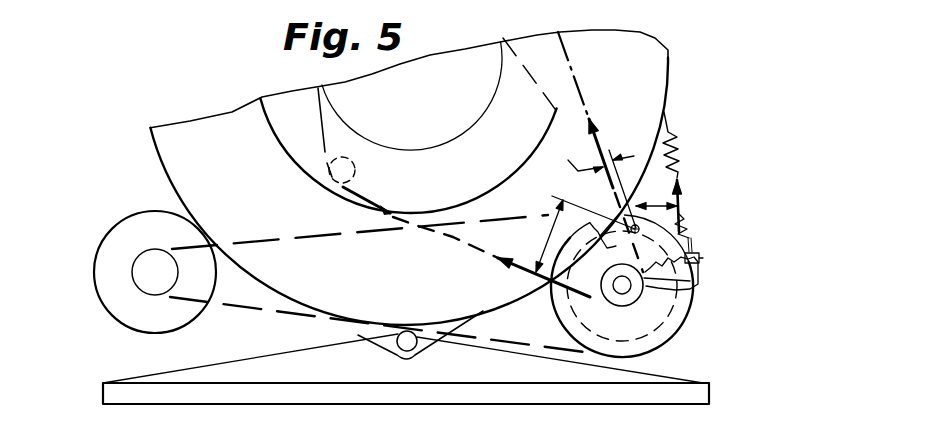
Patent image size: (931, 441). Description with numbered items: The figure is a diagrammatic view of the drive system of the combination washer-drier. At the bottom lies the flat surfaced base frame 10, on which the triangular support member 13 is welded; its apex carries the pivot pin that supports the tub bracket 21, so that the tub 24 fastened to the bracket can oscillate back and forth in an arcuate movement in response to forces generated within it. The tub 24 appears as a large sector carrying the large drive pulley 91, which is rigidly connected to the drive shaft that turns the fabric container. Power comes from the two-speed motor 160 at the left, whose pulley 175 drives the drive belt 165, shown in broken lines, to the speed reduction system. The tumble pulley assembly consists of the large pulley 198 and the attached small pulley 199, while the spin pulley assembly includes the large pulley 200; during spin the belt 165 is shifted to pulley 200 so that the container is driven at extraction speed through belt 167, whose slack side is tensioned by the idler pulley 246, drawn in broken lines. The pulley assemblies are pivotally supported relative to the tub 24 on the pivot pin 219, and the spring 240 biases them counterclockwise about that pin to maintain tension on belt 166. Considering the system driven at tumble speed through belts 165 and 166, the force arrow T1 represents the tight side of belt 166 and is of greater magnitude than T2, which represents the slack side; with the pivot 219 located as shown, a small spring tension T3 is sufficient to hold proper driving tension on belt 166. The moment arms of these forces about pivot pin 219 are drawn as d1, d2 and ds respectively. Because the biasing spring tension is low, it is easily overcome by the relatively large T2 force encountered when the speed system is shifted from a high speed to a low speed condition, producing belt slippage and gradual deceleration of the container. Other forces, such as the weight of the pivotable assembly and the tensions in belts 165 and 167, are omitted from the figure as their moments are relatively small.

The base frame 10 is at (477, 394).
The support member 13 is at (288, 383).
The tub bracket 21 is at (378, 335).
The tub 24 is at (145, 173).
The large drive pulley 91 is at (281, 135).
The two-speed motor 160 is at (125, 312).
The drive belt 165 is at (254, 310).
The belt 166 is at (431, 233).
The belt 167 is at (333, 142).
The pulley 175 is at (138, 268).
The large pulley 198 is at (683, 322).
The small pulley 199 is at (673, 340).
The large pulley 200 is at (693, 290).
The pivot pin 219 is at (690, 242).
The spring 240 is at (680, 150).
The idler pulley 246 is at (333, 176).
The tight side belt tension T1 is at (595, 137).
The slack side belt tension T2 is at (514, 266).
The spring tension T3 is at (684, 190).
The moment arm of T1 d1 is at (593, 160).
The moment arm of T2 d2 is at (549, 224).
The moment arm of spring tension ds is at (668, 206).